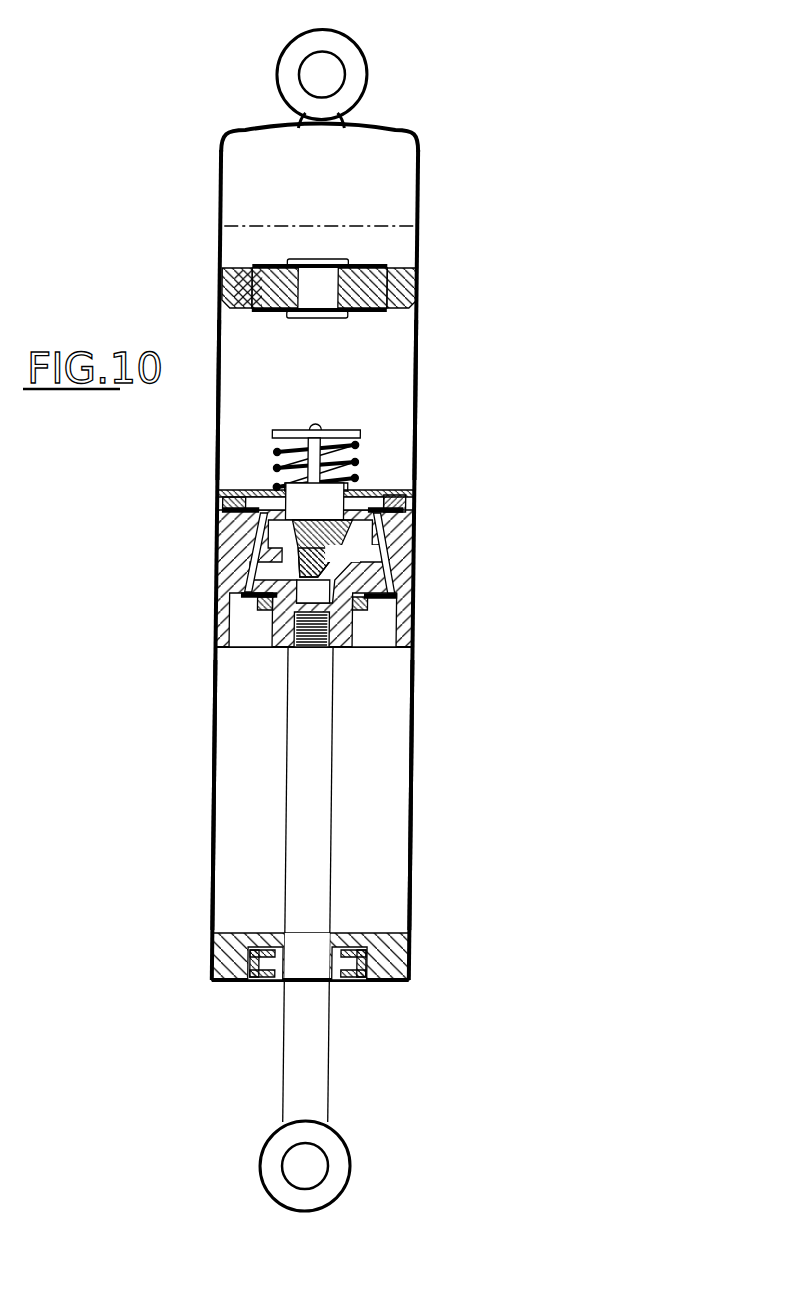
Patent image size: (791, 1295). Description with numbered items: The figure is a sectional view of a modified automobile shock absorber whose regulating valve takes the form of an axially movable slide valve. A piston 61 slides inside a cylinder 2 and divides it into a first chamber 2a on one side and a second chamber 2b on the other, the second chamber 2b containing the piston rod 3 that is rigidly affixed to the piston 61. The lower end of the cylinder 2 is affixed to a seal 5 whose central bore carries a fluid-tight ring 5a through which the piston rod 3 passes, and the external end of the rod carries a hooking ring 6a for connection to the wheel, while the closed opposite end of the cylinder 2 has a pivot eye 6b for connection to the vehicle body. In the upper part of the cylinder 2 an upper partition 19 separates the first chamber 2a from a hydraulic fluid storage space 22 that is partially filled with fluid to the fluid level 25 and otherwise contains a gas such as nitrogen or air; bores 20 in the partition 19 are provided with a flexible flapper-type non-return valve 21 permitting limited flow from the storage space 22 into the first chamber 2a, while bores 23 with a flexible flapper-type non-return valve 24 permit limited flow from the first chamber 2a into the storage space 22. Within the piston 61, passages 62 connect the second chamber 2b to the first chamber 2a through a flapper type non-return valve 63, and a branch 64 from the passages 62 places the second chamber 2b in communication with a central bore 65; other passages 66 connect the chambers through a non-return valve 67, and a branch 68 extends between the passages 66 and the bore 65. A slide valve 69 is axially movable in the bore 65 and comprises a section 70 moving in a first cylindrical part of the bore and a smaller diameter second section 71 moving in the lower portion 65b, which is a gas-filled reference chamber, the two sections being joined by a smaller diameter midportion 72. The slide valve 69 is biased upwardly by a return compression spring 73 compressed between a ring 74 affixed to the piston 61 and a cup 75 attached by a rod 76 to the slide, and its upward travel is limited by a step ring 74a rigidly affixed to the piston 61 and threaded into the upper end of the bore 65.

The cylinder 2 is at (430, 716).
The first chamber 2a is at (376, 388).
The second chamber 2b is at (374, 811).
The piston rod 3 is at (314, 783).
The seal 5 is at (387, 961).
The fluid-tight ring 5a is at (355, 980).
The hooking ring 6a is at (335, 1160).
The pivot eye 6b is at (352, 72).
The upper partition 19 is at (357, 292).
The bores 20 is at (255, 297).
The flexible flapper-type non-return valve 21 is at (263, 317).
The hydraulic fluid storage space 22 is at (267, 197).
The bores 23 is at (395, 282).
The flexible flapper-type non-return valve 24 is at (375, 265).
The fluid level 25 is at (334, 223).
The piston 61 is at (400, 568).
The passages 62 is at (383, 546).
The flapper type non-return valve 63 is at (404, 492).
The branch 64 is at (355, 558).
The central bore 65 is at (298, 563).
The lower portion of bore 65b is at (318, 588).
The passages 66 is at (252, 562).
The non-return valve 67 is at (242, 592).
The branch 68 is at (278, 573).
The slide valve 69 is at (285, 546).
The section 70 is at (344, 527).
The second section 71 is at (330, 580).
The midportion 72 is at (385, 533).
The return compression spring 73 is at (275, 452).
The ring 74 is at (236, 505).
The step ring 74a is at (274, 510).
The cup 75 is at (328, 435).
The rod 76 is at (315, 463).